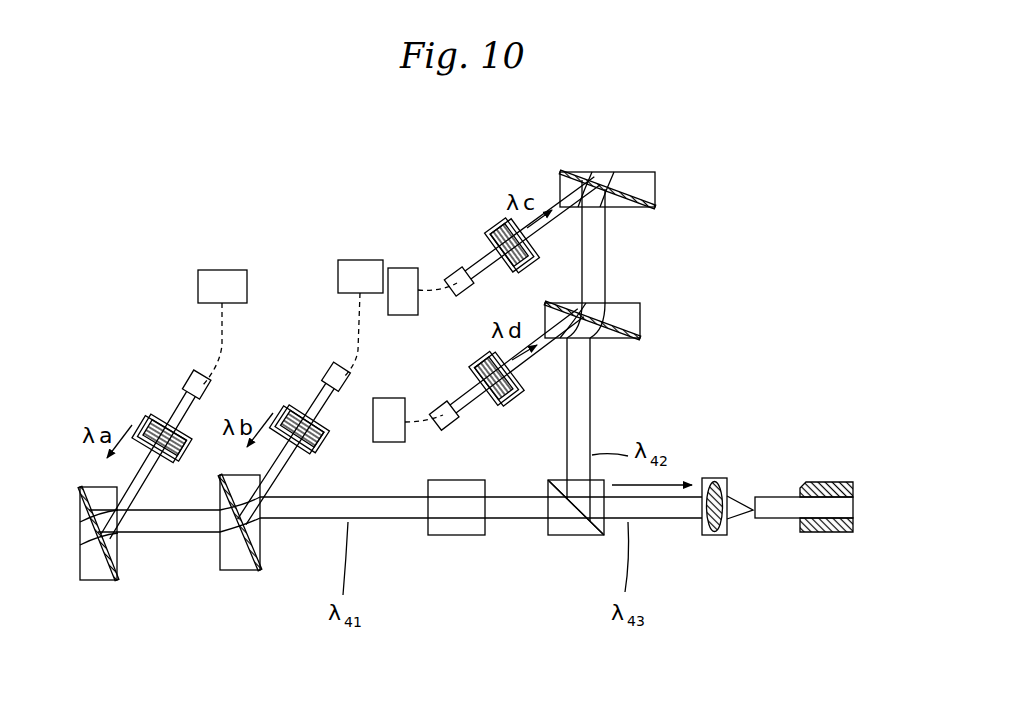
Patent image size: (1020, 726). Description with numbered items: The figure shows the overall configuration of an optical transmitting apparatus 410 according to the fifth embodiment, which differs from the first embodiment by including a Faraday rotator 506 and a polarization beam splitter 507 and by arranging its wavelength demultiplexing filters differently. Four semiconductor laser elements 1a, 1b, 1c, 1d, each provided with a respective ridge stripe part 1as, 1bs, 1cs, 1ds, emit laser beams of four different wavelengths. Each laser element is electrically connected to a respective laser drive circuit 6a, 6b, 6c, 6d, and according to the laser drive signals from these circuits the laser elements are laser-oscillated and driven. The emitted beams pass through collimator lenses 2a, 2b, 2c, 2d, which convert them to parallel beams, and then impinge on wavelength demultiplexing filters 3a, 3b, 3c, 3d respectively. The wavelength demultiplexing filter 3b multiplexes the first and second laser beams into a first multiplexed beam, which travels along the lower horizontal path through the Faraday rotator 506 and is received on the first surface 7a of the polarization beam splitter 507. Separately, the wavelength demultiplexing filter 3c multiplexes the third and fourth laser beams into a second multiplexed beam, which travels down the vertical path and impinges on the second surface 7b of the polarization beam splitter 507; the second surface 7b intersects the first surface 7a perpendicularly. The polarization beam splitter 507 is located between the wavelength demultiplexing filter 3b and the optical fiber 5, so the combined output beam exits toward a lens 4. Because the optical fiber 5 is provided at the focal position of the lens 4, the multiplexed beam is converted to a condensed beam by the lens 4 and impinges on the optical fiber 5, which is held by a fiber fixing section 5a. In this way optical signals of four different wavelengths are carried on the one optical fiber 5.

The optical transmitting apparatus 410 is at (120, 182).
The semiconductor laser element 1a is at (180, 392).
The ridge stripe part 1as is at (194, 386).
The semiconductor laser element 1b is at (320, 387).
The ridge stripe part 1bs is at (337, 380).
The semiconductor laser element 1c is at (457, 263).
The ridge stripe part 1cs is at (462, 290).
The semiconductor laser element 1d is at (455, 422).
The ridge stripe part 1ds is at (440, 433).
The lens 2a is at (140, 418).
The lens 2b is at (280, 412).
The lens 2c is at (487, 227).
The lens 2d is at (473, 367).
The wavelength demultiplexing filter 3a is at (100, 580).
The wavelength demultiplexing filter 3b is at (240, 570).
The wavelength demultiplexing filter 3c is at (638, 208).
The wavelength demultiplexing filter 3d is at (625, 340).
The lens 4 is at (698, 528).
The optical fiber 5 is at (804, 531).
The fiber fixing section 5a is at (832, 482).
The laser drive circuit 6a is at (225, 270).
The laser drive circuit 6b is at (367, 260).
The laser drive circuit 6c is at (395, 268).
The laser drive circuit 6d is at (375, 442).
The first surface 7a is at (552, 525).
The second surface 7b is at (560, 480).
The Faraday rotator 506 is at (455, 540).
The polarization beam splitter 507 is at (542, 531).